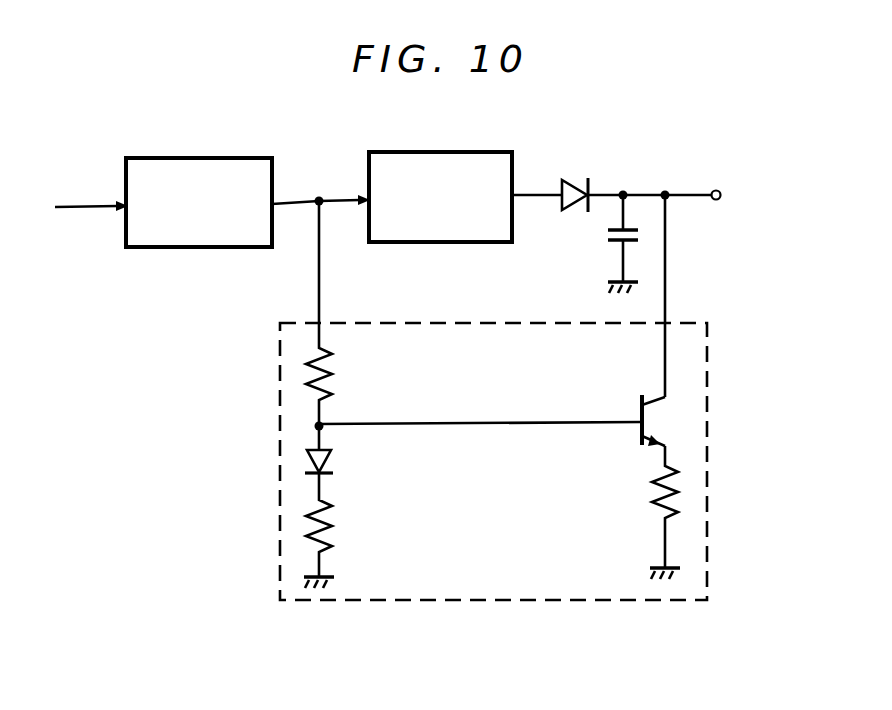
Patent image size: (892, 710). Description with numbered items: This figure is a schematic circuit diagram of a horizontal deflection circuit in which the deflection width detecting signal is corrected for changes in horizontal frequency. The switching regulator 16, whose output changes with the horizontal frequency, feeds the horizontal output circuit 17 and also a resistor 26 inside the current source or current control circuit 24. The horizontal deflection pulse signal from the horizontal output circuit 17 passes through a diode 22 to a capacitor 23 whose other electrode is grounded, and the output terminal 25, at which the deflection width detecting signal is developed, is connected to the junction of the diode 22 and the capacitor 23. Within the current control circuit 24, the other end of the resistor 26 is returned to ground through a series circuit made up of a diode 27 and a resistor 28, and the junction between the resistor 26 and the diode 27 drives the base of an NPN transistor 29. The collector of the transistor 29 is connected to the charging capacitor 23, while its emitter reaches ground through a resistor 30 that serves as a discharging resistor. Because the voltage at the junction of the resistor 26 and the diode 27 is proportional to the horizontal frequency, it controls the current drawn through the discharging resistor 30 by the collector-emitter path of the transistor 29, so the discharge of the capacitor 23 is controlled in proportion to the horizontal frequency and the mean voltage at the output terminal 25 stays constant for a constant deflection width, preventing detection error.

The switching regulator 16 is at (233, 157).
The horizontal output circuit 17 is at (480, 152).
The diode 22 is at (574, 188).
The capacitor 23 is at (608, 240).
The current control circuit 24 is at (708, 566).
The output terminal 25 is at (716, 188).
The resistor 26 is at (333, 369).
The diode 27 is at (333, 455).
The resistor 28 is at (333, 521).
The NPN transistor 29 is at (641, 400).
The resistor 30 is at (654, 497).